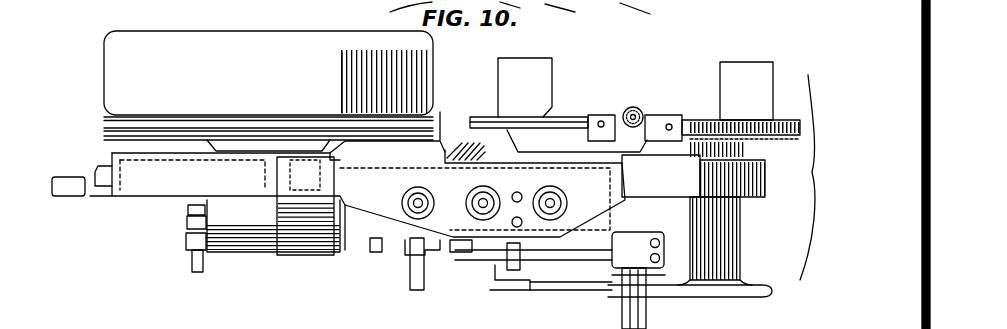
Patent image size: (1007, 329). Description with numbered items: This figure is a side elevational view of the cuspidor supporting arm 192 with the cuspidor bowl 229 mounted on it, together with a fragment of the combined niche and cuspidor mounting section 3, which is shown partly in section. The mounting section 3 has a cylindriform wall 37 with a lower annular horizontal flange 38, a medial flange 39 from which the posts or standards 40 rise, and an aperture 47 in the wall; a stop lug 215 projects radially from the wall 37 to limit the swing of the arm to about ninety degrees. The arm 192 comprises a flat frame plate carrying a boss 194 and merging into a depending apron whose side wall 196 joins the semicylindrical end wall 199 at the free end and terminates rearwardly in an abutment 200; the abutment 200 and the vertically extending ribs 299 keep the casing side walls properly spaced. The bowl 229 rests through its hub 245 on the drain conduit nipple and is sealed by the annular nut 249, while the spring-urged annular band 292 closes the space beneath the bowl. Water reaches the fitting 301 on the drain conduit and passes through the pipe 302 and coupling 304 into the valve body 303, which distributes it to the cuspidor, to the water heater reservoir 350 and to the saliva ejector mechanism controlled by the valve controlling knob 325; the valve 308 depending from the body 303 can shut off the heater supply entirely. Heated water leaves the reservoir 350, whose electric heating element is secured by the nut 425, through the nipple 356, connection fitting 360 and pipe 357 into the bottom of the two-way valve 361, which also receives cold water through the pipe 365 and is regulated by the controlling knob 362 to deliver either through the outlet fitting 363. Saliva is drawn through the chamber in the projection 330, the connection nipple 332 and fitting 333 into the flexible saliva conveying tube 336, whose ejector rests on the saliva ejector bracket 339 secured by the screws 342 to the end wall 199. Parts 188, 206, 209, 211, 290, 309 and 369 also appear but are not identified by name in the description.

The combined niche and cuspidor mounting section 3 is at (813, 177).
The cylindriform wall 37 is at (728, 248).
The lower annular horizontal flange 38 is at (738, 286).
The medial flange 39 is at (572, 130).
The posts or standards 40 is at (510, 68).
The aperture 47 is at (620, 115).
The knurled knob 188 is at (641, 108).
The cuspidor supporting arm 192 is at (186, 226).
The boss 194 is at (455, 109).
The side wall 196 is at (305, 206).
The semicylindrical end wall 199 is at (114, 197).
The abutment 200 is at (652, 125).
The shaft 206 is at (735, 195).
The head block 209 is at (622, 165).
The bracket 211 is at (634, 170).
The stop lug 215 is at (545, 115).
The cuspidor bowl 229 is at (268, 73).
The hub 245 is at (232, 143).
The annular nut 249 is at (250, 150).
The roller wheel 290 is at (490, 180).
The annular band 292 is at (104, 131).
The vertically extending ribs 299 is at (237, 249).
The fitting 301 is at (660, 286).
The pipe 302 is at (593, 262).
The valve body 303 is at (564, 197).
The coupling 304 is at (510, 272).
The valve 308 is at (542, 282).
The screws 309 is at (520, 180).
The valve controlling knob 325 is at (558, 205).
The projection 330 is at (189, 210).
The connection nipple 332 is at (188, 226).
The fitting 333 is at (188, 243).
The flexible saliva conveying tube 336 is at (193, 258).
The saliva ejector bracket 339 is at (67, 196).
The screws 342 is at (97, 168).
The water heater reservoir 350 is at (225, 253).
The nipple 356 is at (345, 250).
The pipe 357 is at (445, 258).
The connection fitting 360 is at (368, 262).
The valve 361 is at (450, 112).
The controlling knob 362 is at (416, 192).
The outlet fitting 363 is at (492, 280).
The pipe 365 is at (410, 162).
The bar 369 is at (411, 282).
The nut 425 is at (193, 8).